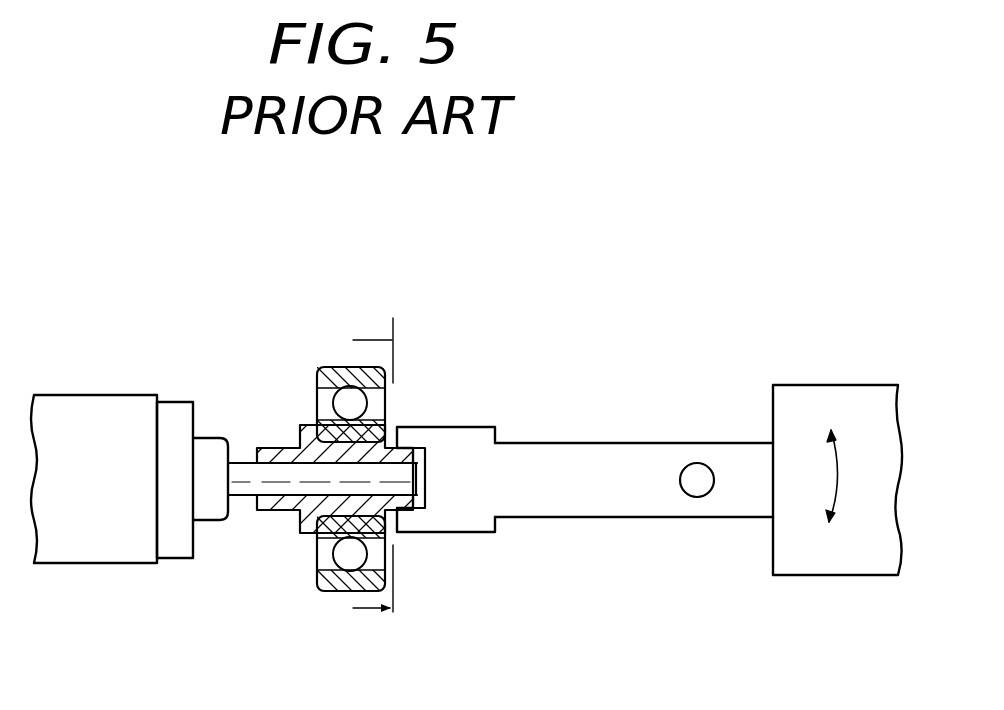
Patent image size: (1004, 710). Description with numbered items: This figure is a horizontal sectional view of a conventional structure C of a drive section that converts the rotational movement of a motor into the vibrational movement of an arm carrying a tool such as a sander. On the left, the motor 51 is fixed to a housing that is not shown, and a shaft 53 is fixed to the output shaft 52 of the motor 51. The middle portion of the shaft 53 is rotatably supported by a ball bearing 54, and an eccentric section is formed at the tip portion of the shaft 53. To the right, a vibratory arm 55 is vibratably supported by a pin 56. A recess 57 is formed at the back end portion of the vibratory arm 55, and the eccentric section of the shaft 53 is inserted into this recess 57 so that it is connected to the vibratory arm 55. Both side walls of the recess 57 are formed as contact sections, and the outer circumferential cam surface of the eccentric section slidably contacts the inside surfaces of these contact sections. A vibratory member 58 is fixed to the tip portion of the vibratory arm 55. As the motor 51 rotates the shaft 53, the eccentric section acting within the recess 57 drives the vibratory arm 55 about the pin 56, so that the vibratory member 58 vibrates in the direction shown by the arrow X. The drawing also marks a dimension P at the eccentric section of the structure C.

The motor 51 is at (82, 547).
The output shaft 52 is at (242, 490).
The shaft 53 is at (287, 503).
The ball bearing 54 is at (343, 370).
The vibratory arm 55 is at (628, 495).
The pin 56 is at (697, 470).
The recess 57 is at (423, 472).
The vibratory member 58 is at (865, 557).
The structure C is at (560, 307).
The pitch dimension P is at (363, 469).
The arrow X is at (842, 473).